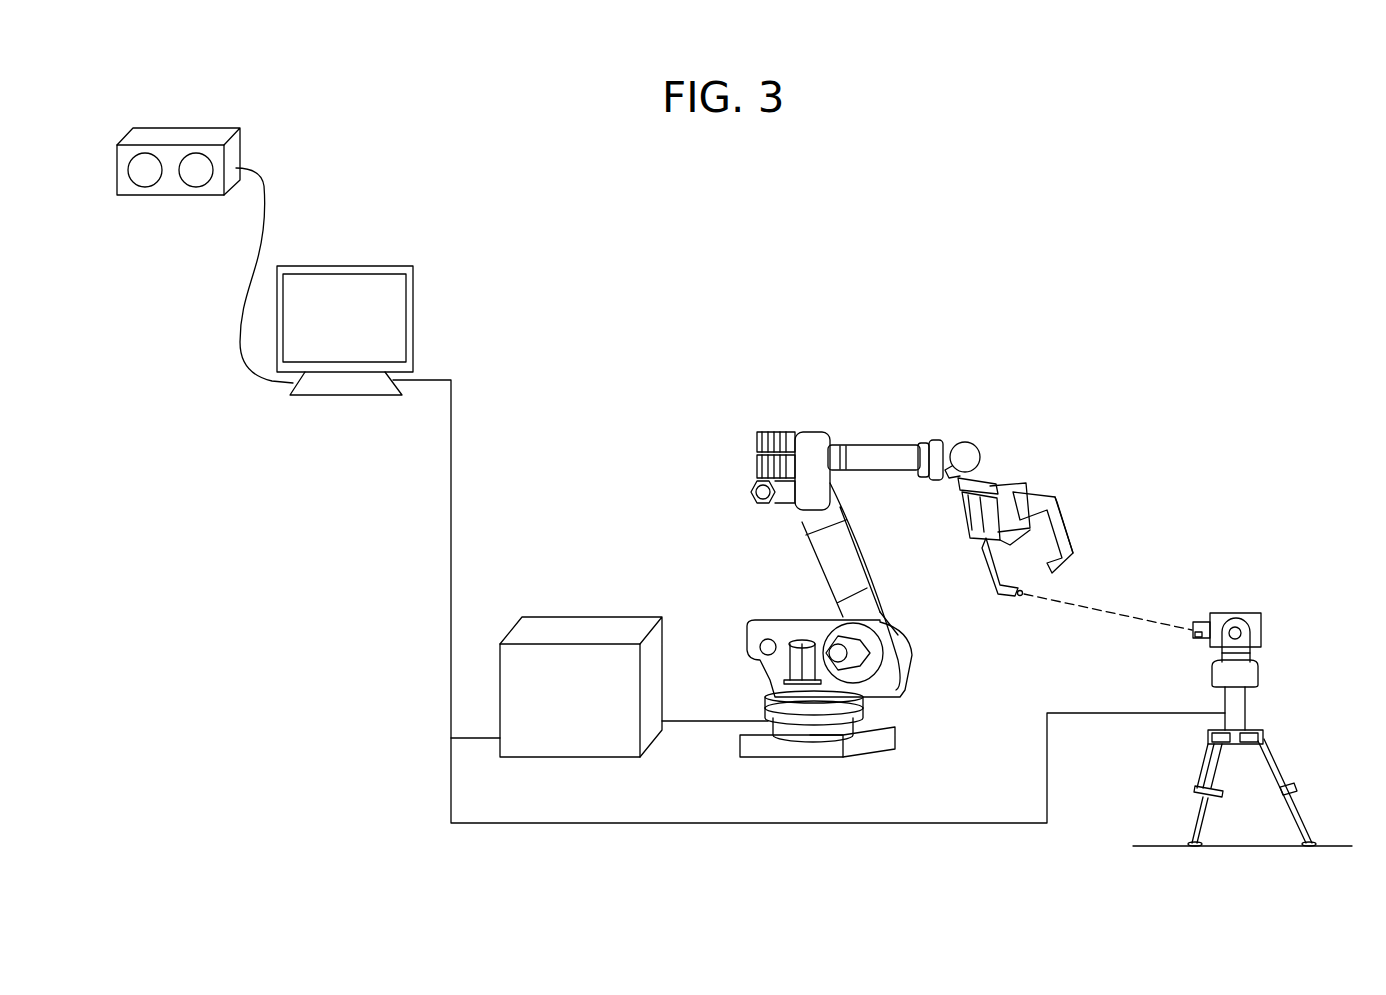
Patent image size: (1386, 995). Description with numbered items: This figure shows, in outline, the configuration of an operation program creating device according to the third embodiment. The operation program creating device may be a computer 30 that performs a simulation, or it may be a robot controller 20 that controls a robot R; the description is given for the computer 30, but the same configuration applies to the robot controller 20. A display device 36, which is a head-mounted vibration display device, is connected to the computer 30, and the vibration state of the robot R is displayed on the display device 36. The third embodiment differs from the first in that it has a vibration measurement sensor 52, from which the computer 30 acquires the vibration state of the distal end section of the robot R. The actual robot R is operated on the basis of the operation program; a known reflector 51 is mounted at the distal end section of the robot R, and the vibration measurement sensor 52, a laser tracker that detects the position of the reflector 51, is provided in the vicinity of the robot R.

The display device 36 is at (177, 128).
The computer 30 is at (413, 310).
The robot controller 20 is at (577, 614).
The robot R is at (889, 426).
The reflector 51 is at (1018, 600).
The vibration measurement sensor 52 is at (1262, 630).